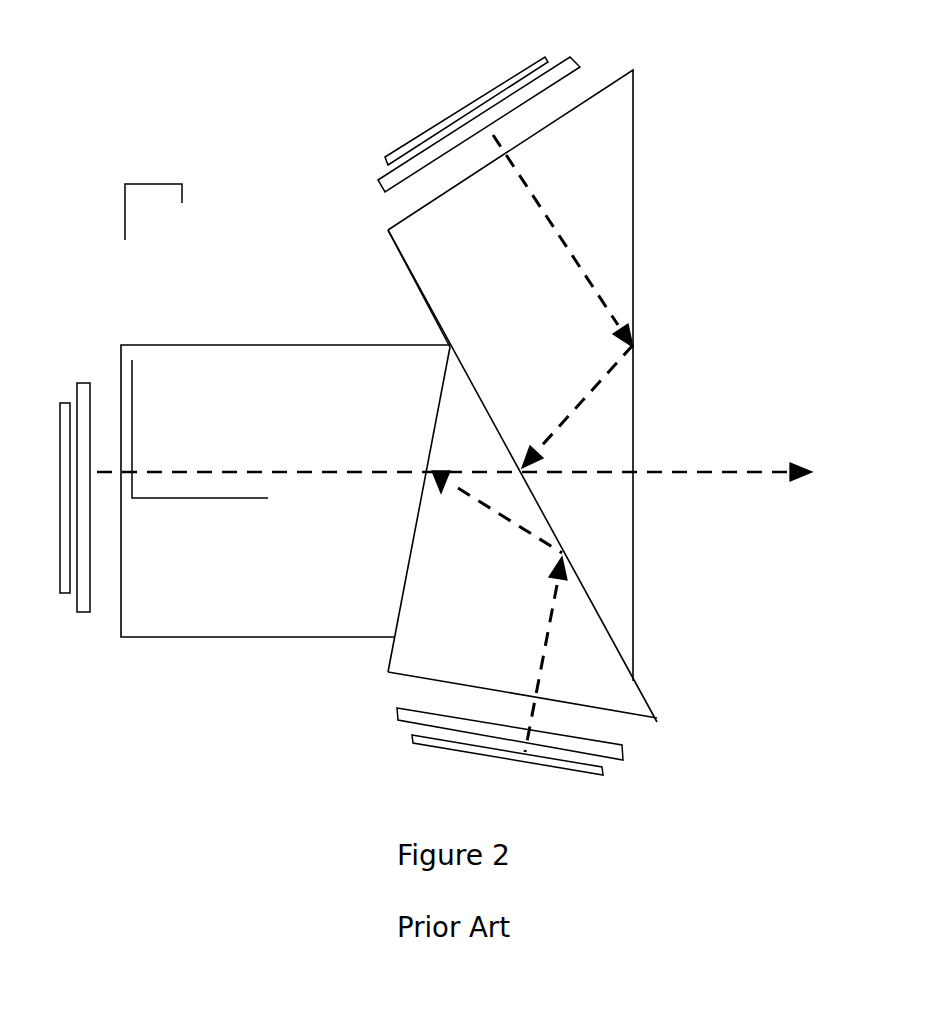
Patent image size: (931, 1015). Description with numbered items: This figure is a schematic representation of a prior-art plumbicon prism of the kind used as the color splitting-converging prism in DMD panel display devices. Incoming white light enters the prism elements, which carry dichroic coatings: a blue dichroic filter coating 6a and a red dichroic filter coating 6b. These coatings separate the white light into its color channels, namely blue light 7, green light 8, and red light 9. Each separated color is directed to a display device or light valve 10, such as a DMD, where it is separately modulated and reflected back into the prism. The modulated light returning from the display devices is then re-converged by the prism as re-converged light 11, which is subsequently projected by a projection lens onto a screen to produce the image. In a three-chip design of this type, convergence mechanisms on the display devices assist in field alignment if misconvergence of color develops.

The blue dichroic filter coating 6a is at (412, 303).
The red dichroic filter coating 6b is at (416, 429).
The blue light 7 is at (645, 164).
The green light 8 is at (216, 652).
The red light 9 is at (625, 713).
The light valve 10 is at (450, 765).
The re-converged light 11 is at (710, 494).